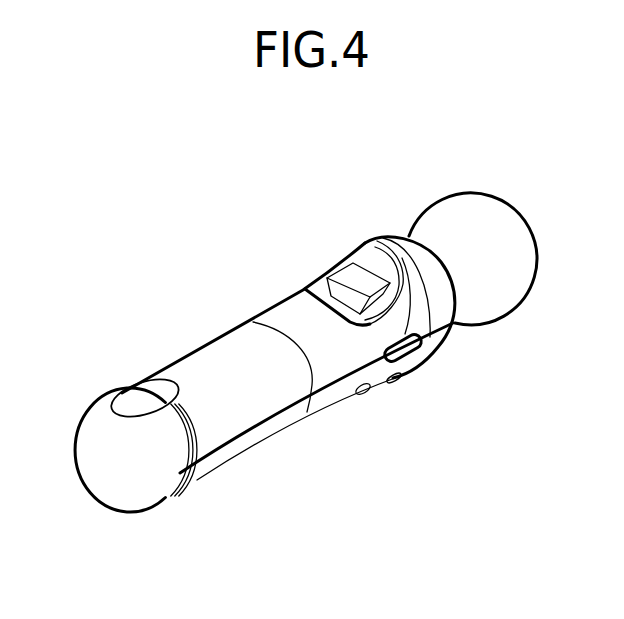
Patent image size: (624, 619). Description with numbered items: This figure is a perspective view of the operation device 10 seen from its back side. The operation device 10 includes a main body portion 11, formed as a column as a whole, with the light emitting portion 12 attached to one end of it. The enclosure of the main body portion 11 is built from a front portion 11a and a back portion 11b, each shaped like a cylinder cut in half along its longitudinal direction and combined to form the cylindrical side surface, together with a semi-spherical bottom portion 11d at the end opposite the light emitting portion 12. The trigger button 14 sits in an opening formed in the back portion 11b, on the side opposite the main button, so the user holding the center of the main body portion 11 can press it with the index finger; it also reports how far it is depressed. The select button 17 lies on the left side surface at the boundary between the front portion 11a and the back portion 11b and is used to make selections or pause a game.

The operation device 10 is at (297, 349).
The main body portion 11 is at (256, 387).
The front portion 11a is at (258, 437).
The back portion 11b is at (210, 358).
The bottom portion 11d is at (107, 486).
The light emitting portion 12 is at (486, 195).
The trigger button 14 is at (343, 275).
The select button 17 is at (390, 364).